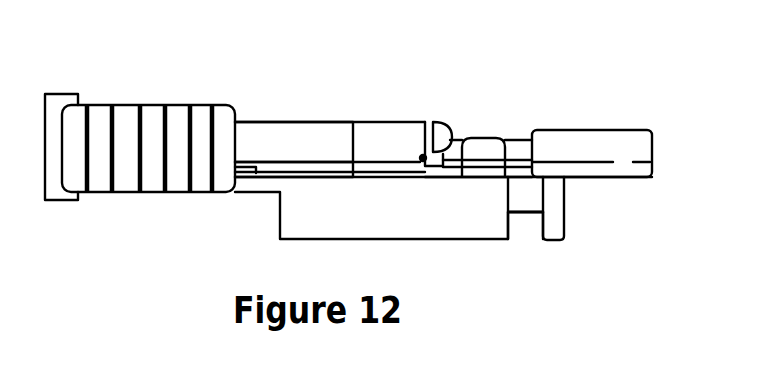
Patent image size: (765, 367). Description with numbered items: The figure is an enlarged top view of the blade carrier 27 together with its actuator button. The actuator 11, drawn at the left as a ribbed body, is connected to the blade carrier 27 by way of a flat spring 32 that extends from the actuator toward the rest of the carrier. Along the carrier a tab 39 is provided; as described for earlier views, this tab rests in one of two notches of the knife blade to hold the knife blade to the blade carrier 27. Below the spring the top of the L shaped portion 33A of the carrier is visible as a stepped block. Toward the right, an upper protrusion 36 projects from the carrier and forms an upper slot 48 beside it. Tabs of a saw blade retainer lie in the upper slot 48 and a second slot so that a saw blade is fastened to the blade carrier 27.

The actuator 11 is at (166, 92).
The blade carrier 27 is at (441, 54).
The flat spring 32 is at (272, 146).
The tab 39 is at (450, 118).
The L shaped portion 33A is at (309, 209).
The upper protrusion 36 is at (560, 220).
The upper slot 48 is at (529, 237).